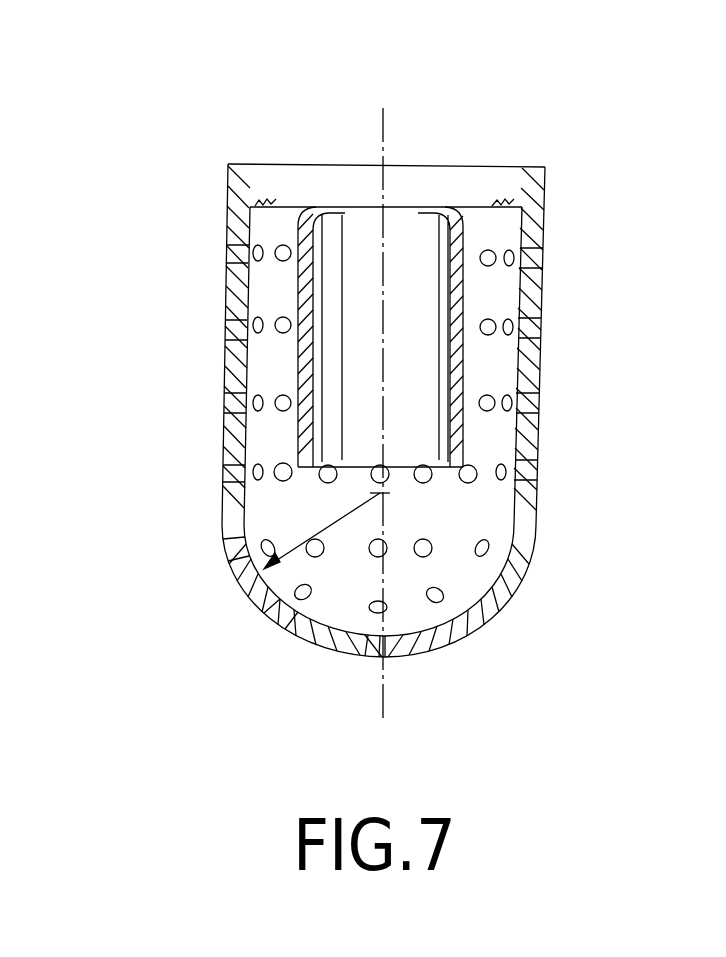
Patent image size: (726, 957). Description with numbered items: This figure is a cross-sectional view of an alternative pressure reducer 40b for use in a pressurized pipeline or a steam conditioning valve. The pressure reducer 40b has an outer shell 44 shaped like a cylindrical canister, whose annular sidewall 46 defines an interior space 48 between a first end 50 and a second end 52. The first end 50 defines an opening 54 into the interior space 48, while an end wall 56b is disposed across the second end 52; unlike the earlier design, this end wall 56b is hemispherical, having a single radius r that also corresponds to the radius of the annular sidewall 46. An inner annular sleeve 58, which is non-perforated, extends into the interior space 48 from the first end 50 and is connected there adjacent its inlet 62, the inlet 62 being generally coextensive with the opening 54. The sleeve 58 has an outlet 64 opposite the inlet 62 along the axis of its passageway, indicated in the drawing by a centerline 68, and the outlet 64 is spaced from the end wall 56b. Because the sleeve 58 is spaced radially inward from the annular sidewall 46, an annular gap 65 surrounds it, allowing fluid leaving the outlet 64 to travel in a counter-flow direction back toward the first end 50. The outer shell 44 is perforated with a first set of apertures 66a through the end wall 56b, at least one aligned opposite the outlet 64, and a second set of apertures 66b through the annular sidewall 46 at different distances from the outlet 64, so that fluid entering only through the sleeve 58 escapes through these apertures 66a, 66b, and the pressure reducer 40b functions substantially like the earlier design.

The pressure reducer 40b is at (187, 246).
The outer shell 44 is at (541, 305).
The annular sidewall 46 is at (540, 382).
The interior space 48 is at (433, 359).
The first end 50 is at (545, 192).
The second end 52 is at (537, 503).
The opening 54 is at (440, 167).
The end wall 56b is at (425, 653).
The inner annular sleeve 58 is at (465, 300).
The inlet 62 is at (413, 250).
The outlet 64 is at (405, 463).
The annular gap 65 is at (490, 360).
The first set of apertures 66a is at (226, 553).
The second set of apertures 66b is at (225, 475).
The longitudinal axis 68 is at (385, 135).
The radius r is at (330, 523).